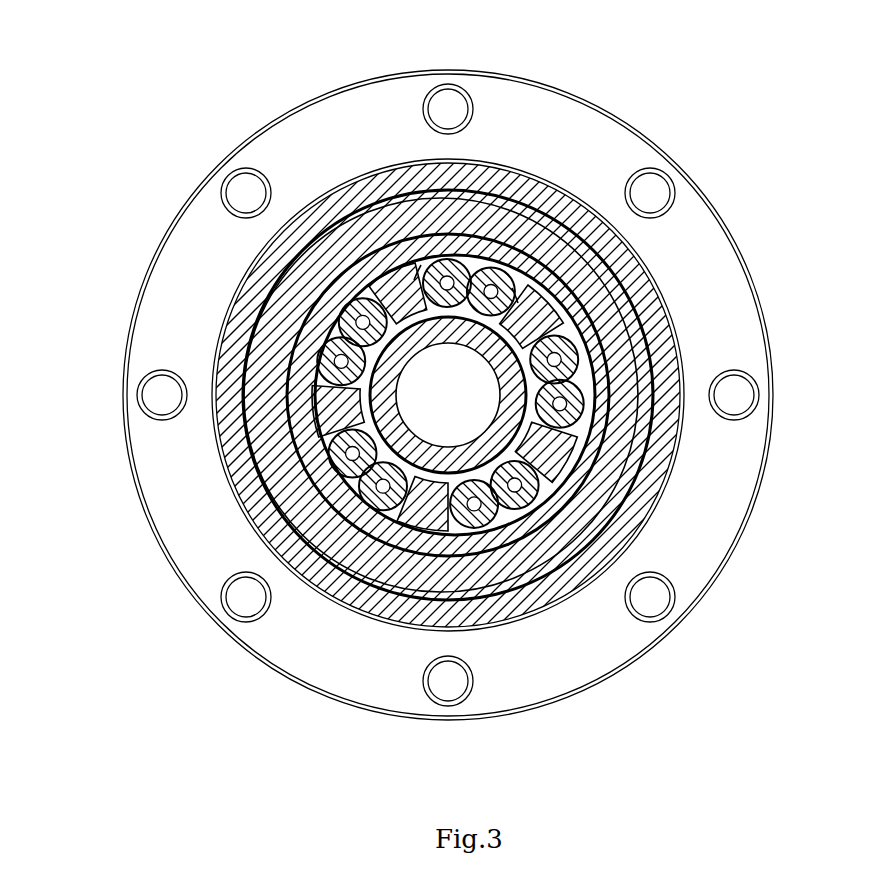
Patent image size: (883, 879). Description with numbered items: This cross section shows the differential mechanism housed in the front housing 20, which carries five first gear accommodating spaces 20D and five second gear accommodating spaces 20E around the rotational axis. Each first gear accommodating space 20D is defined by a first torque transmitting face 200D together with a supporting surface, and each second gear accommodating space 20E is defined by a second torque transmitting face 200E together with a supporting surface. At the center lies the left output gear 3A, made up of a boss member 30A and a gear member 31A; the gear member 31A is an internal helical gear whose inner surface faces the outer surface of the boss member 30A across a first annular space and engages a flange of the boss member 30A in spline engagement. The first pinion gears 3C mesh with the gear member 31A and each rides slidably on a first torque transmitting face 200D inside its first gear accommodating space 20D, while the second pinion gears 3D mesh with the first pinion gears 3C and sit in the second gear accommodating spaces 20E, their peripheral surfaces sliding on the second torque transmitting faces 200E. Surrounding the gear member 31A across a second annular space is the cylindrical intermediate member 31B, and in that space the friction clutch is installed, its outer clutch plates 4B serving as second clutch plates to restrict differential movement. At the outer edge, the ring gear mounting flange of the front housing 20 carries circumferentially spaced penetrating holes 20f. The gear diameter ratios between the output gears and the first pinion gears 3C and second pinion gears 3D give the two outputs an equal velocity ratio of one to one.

The front housing 20 is at (335, 408).
The first gear accommodating space 20D is at (552, 228).
The second gear accommodating space 20E is at (390, 200).
The penetrating hole 20f is at (150, 405).
The first torque transmitting face 200D is at (509, 295).
The second torque transmitting face 200E is at (427, 276).
The left output gear 3A is at (565, 447).
The first pinion gear 3C is at (494, 282).
The second pinion gear 3D is at (445, 270).
The boss member 30A is at (425, 468).
The gear member 31A is at (330, 512).
The intermediate member 31B is at (347, 568).
The outer clutch plate 4B is at (522, 556).